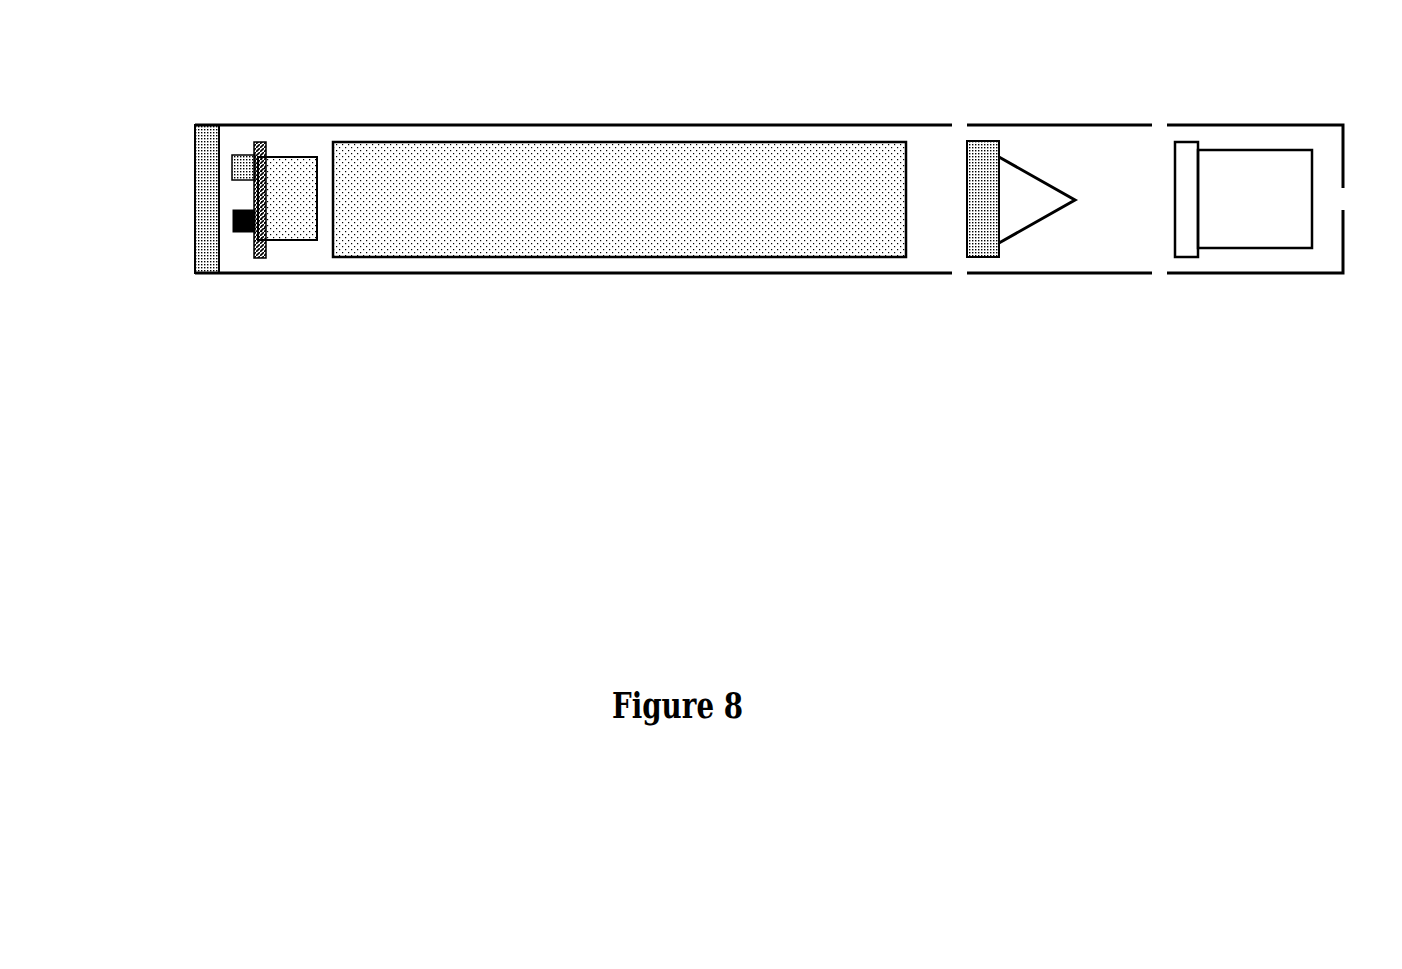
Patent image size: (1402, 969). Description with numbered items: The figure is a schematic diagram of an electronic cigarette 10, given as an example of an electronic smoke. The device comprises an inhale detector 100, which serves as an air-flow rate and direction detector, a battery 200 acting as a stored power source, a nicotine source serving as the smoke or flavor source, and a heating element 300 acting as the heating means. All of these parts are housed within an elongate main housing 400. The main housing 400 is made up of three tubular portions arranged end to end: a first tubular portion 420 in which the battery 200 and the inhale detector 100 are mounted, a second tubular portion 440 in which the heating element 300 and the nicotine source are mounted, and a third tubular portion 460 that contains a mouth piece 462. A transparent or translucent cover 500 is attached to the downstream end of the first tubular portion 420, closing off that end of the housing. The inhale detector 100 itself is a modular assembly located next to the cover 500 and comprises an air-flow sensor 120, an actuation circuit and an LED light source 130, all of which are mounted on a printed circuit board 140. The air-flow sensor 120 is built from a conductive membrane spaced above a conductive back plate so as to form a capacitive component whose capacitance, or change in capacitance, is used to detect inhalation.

The electronic cigarette 10 is at (1080, 546).
The inhale detector 100 is at (298, 300).
The air-flow sensor 120 is at (298, 140).
The LED light source 130 is at (232, 155).
The printed circuit board 140 is at (258, 262).
The battery 200 is at (517, 228).
The heating element 300 is at (1032, 302).
The main housing 400 is at (1320, 58).
The first tubular portion 420 is at (620, 125).
The second tubular portion 440 is at (1013, 125).
The third tubular portion 460 is at (1217, 125).
The mouth piece 462 is at (1233, 228).
The transparent or translucent cover 500 is at (192, 273).